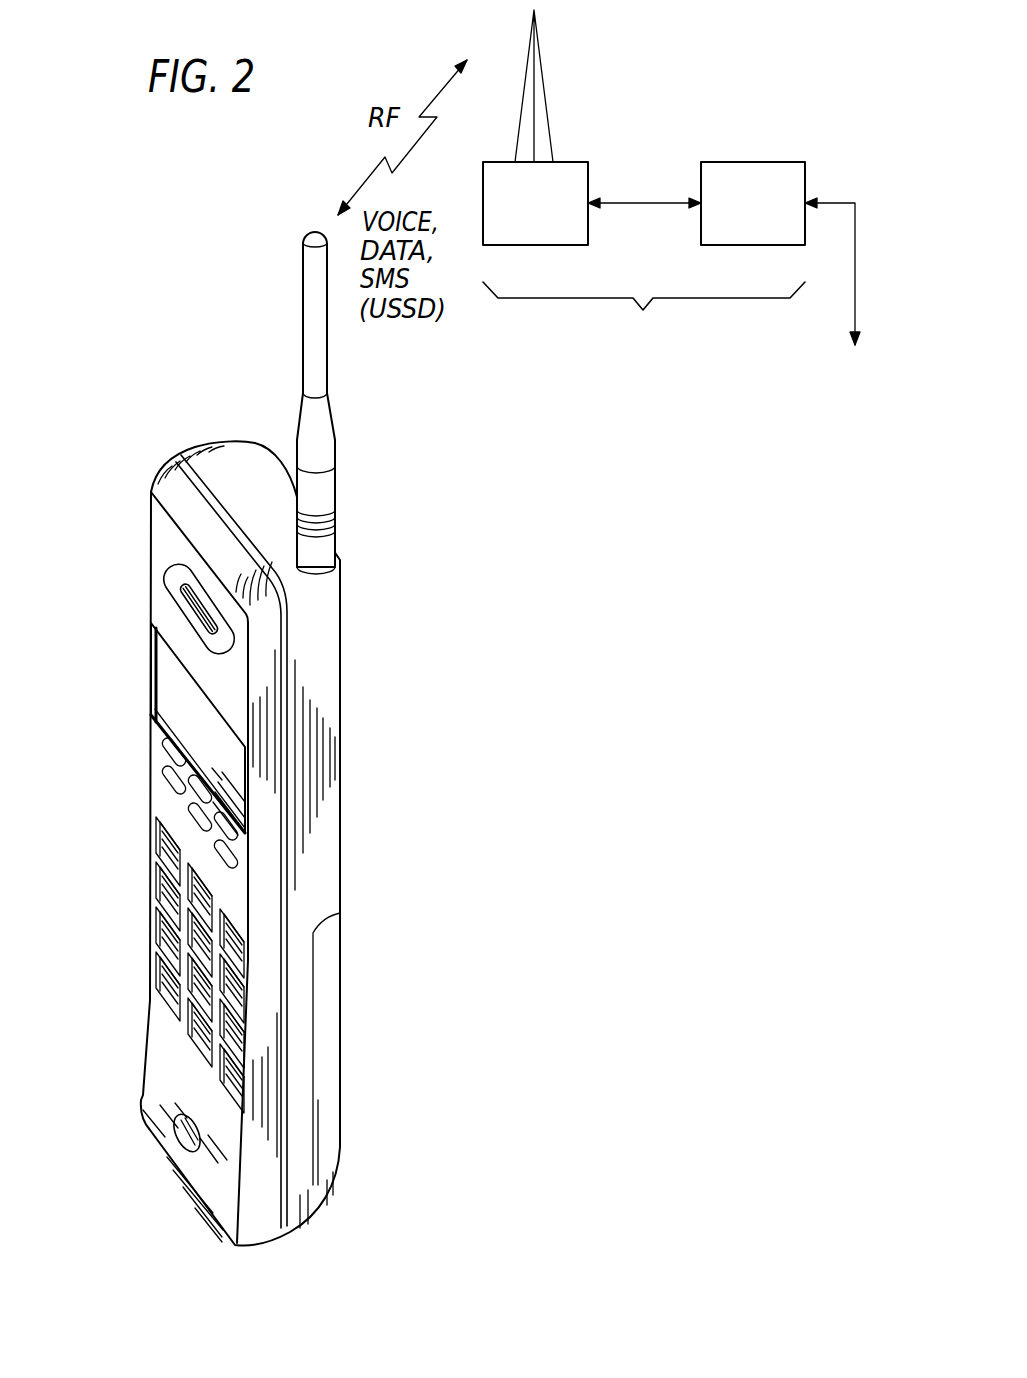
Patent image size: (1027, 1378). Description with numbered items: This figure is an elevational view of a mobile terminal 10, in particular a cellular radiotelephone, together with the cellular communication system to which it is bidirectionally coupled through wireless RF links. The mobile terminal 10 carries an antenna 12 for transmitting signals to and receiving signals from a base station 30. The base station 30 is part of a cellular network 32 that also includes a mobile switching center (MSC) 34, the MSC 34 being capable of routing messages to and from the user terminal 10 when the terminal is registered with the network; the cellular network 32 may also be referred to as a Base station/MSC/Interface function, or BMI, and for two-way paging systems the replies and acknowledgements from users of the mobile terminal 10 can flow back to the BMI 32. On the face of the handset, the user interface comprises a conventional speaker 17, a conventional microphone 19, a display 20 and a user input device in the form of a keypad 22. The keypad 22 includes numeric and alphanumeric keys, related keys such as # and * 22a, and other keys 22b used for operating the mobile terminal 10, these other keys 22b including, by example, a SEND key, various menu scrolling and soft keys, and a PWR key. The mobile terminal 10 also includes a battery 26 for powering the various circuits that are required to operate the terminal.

The mobile terminal 10 is at (380, 659).
The antenna 12 is at (313, 370).
The speaker 17 is at (188, 592).
The microphone 19 is at (182, 1138).
The display 20 is at (173, 703).
The keypad 22 is at (219, 924).
The related keys 22a is at (157, 953).
The other keys 22b is at (172, 800).
The battery 26 is at (323, 1088).
The base station 30 is at (528, 245).
The cellular network 32 is at (690, 198).
The mobile switching center 34 is at (723, 245).